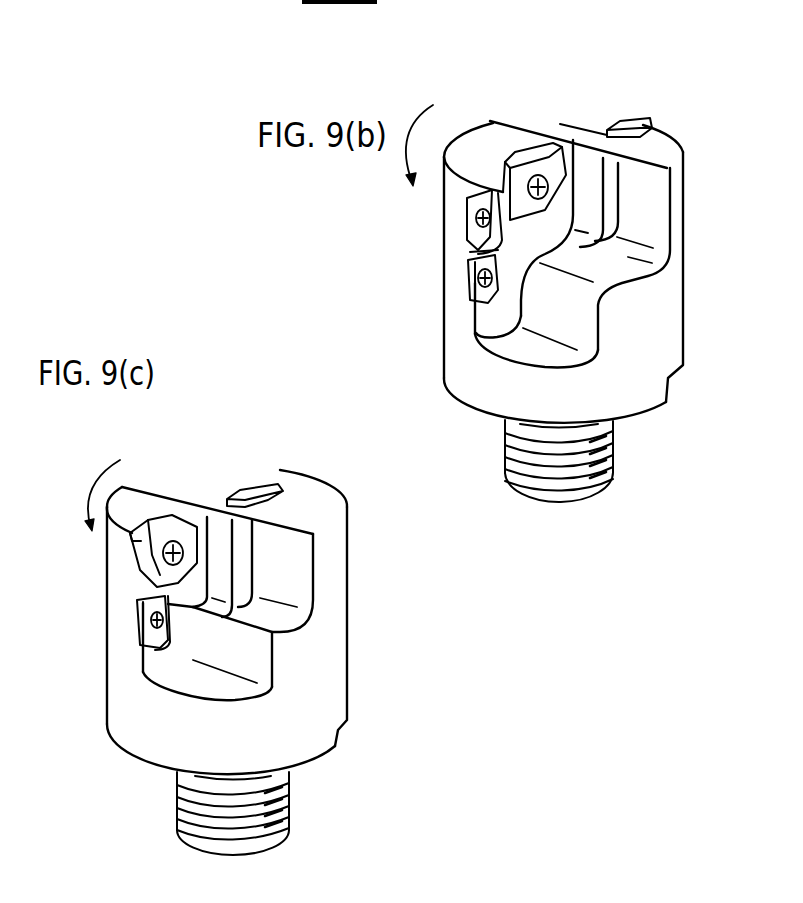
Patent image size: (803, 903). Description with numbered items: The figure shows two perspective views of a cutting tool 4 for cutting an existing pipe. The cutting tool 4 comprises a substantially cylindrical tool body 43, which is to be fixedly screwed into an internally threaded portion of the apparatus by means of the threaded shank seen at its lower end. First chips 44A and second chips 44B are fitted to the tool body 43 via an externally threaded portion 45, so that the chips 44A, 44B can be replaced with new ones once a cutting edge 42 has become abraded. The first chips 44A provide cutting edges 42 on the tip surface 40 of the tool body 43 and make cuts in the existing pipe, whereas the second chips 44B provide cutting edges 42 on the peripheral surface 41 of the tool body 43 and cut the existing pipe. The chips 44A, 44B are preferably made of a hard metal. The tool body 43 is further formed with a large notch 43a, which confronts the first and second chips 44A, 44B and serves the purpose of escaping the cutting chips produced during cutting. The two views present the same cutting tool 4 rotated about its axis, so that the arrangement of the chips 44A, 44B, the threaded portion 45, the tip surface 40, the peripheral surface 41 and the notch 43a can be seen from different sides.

In FIG. 9B, the cutting tool 4 is at (708, 135).
In FIG. 9C, the cutting tool 4 is at (352, 487).
In FIG. 9B, the tip surface 40 is at (486, 142).
In FIG. 9C, the tip surface 40 is at (303, 490).
In FIG. 9B, the peripheral surface 41 is at (457, 325).
In FIG. 9C, the peripheral surface 41 is at (127, 683).
In FIG. 9B, the cutting edge 42 is at (642, 112).
In FIG. 9C, the cutting edge 42 is at (150, 523).
In FIG. 9B, the tool body 43 is at (682, 193).
In FIG. 9C, the tool body 43 is at (350, 545).
In FIG. 9B, the notch 43a is at (625, 258).
In FIG. 9C, the notch 43a is at (243, 648).
In FIG. 9B, the first chip 44A is at (655, 112).
In FIG. 9C, the first chip 44A is at (256, 482).
In FIG. 9B, the second chip 44B is at (472, 270).
In FIG. 9C, the second chip 44B is at (137, 608).
In FIG. 9B, the externally threaded portion 45 is at (548, 178).
In FIG. 9C, the externally threaded portion 45 is at (183, 543).